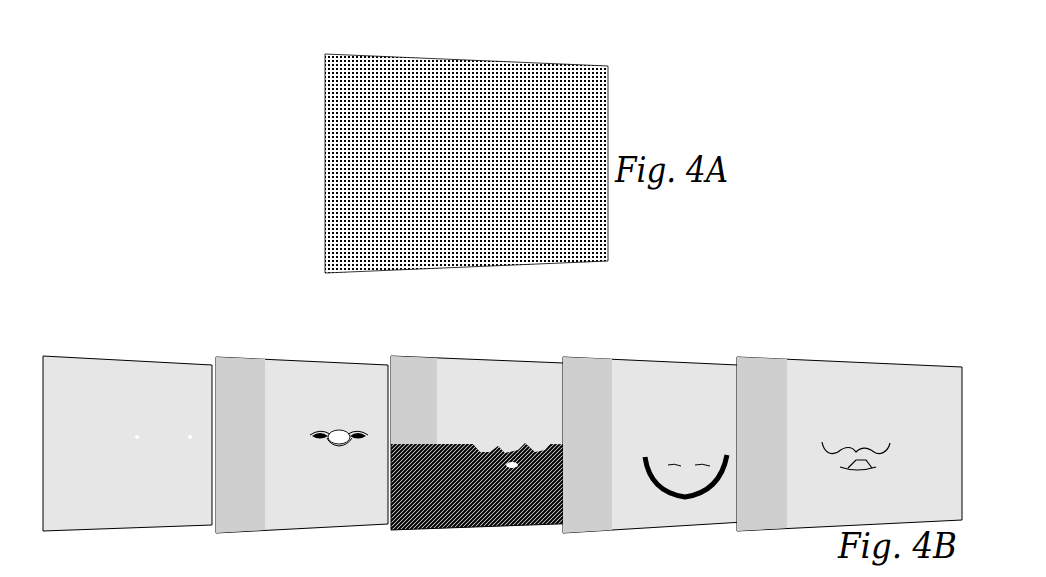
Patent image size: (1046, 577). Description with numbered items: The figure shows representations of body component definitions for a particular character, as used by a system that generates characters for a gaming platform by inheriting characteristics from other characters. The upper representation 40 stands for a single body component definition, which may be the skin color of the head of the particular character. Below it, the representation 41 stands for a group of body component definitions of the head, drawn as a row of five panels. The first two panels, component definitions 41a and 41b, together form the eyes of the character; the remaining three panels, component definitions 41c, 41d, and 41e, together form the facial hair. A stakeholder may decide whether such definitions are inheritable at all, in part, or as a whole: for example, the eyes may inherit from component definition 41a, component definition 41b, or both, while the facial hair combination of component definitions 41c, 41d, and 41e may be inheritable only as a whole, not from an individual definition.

In FIG. 4A, the representation 40 is at (620, 92).
In FIG. 4B, the representation 41 is at (502, 414).
In FIG. 4B, the component definition 41a is at (146, 356).
In FIG. 4B, the component definition 41b is at (329, 356).
In FIG. 4B, the component definition 41c is at (509, 356).
In FIG. 4B, the component definition 41d is at (679, 356).
In FIG. 4B, the component definition 41e is at (868, 356).